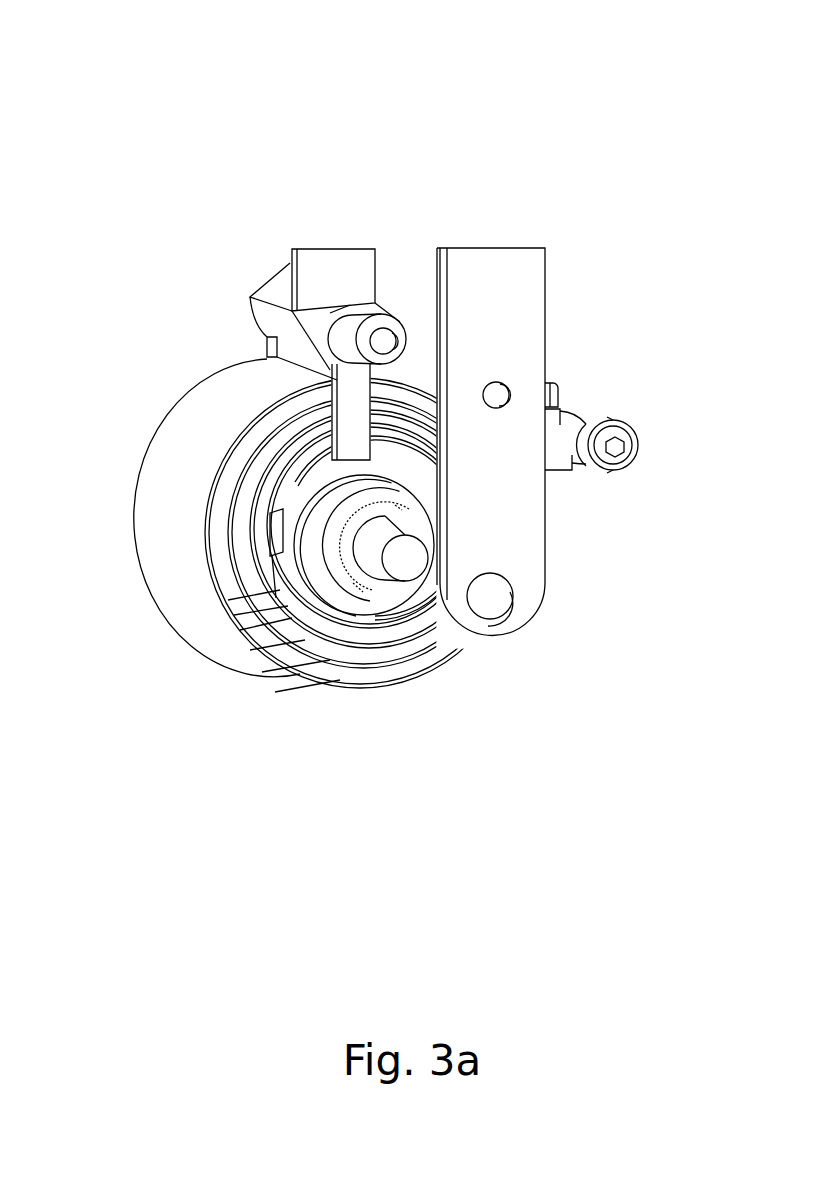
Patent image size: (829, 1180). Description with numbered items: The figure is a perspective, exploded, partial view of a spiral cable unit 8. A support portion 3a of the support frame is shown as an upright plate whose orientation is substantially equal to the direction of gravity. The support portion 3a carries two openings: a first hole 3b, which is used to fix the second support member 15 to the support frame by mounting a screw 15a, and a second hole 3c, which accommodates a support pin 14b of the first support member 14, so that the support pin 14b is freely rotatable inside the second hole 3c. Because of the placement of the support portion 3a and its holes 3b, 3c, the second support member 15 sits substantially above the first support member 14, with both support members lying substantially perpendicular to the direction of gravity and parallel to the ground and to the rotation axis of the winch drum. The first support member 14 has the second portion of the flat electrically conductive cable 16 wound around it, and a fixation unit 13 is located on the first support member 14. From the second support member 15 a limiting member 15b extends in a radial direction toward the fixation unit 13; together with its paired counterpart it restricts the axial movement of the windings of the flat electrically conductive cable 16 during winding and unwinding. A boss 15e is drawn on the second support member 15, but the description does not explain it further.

The spiral cable unit 8 is at (600, 110).
The support portion 3a is at (548, 292).
The first hole 3b is at (510, 393).
The second hole 3c is at (523, 605).
The screw 15a is at (642, 443).
The second support member 15 is at (296, 331).
The boss 15e is at (390, 330).
The limiting member 15b is at (348, 418).
The flat electrically conductive cable 16 is at (163, 580).
The first support member 14 is at (312, 572).
The fixation unit 13 is at (273, 547).
The support pin 14b is at (405, 560).